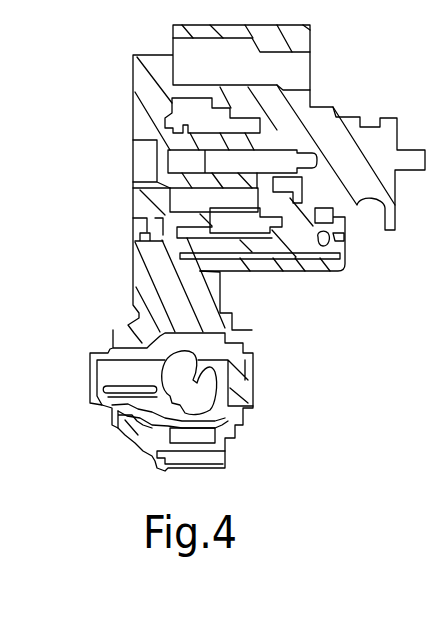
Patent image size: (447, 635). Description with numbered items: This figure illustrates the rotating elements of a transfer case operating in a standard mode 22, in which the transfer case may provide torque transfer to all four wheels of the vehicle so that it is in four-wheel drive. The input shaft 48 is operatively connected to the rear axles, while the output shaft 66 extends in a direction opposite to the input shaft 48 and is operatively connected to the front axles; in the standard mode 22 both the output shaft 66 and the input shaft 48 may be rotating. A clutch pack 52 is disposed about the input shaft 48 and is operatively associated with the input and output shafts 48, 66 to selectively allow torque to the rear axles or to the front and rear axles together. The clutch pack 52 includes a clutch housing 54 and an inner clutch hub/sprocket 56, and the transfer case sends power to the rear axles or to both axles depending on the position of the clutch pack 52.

The standard mode 22 is at (119, 130).
The input shaft 48 is at (285, 158).
The clutch pack 52 is at (250, 218).
The clutch housing 54 is at (237, 237).
The inner clutch hub/sprocket 56 is at (182, 203).
The output shaft 66 is at (97, 378).